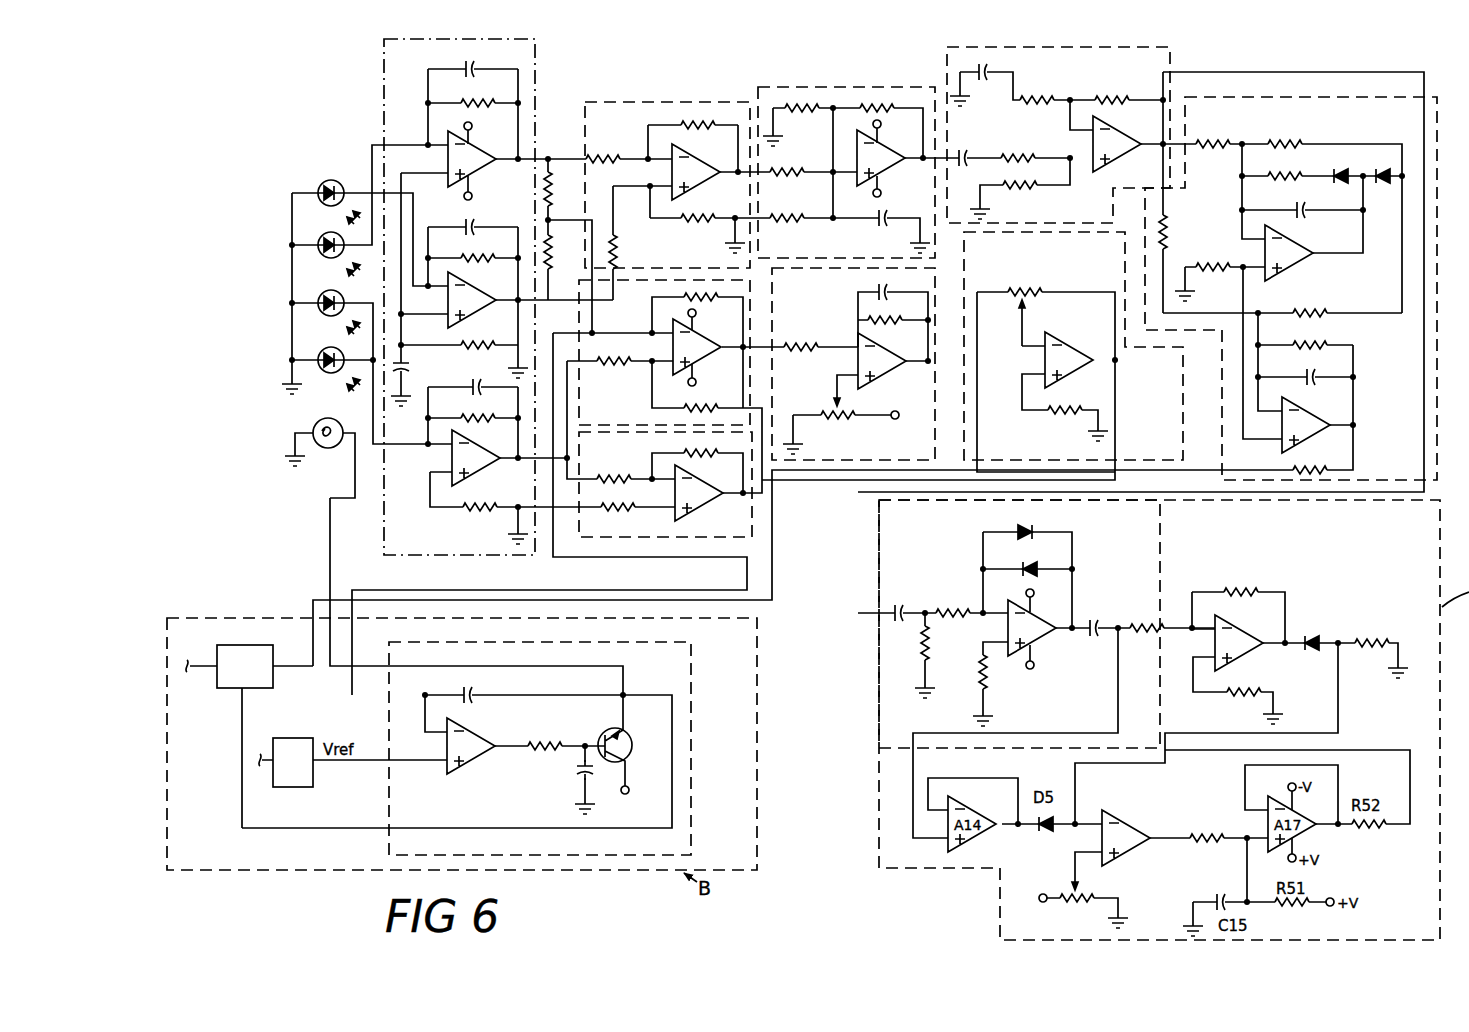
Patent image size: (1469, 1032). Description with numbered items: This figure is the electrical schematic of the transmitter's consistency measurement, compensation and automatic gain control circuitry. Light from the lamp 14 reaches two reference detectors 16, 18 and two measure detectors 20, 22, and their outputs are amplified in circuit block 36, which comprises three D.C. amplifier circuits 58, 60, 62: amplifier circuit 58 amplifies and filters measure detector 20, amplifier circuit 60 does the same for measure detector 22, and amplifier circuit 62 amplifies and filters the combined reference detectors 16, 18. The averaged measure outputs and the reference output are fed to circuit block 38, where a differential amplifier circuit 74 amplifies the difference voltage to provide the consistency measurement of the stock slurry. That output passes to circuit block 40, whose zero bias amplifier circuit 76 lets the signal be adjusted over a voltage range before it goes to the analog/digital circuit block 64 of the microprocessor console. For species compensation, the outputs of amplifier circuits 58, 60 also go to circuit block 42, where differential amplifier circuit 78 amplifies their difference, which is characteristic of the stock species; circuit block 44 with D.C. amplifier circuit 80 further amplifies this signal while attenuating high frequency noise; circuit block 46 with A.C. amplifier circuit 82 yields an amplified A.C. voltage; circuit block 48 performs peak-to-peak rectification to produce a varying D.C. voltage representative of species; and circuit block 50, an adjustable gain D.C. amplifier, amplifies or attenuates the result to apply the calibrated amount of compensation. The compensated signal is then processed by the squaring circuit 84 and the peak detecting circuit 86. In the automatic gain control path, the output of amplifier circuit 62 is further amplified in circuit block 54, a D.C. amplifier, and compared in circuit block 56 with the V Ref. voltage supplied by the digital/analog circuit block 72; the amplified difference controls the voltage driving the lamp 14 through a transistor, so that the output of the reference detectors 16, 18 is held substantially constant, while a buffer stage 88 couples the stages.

The lamp 14 is at (323, 419).
The reference detector 16 is at (320, 312).
The reference detector 18 is at (325, 348).
The measure detector 20 is at (320, 250).
The measure detector 22 is at (320, 198).
The circuit block 36 is at (383, 87).
The circuit block 38 is at (753, 389).
The circuit block 40 is at (891, 460).
The circuit block 42 is at (632, 101).
The circuit block 44 is at (820, 88).
The circuit block 46 is at (1019, 46).
The circuit block 48 is at (1300, 96).
The circuit block 50 is at (1133, 462).
The circuit block 54 is at (755, 530).
The circuit block 56 is at (693, 748).
The amplifier circuit 58 is at (499, 142).
The amplifier circuit 60 is at (492, 308).
The amplifier circuit 62 is at (453, 488).
The analog/digital circuit block 64 is at (231, 690).
The digital/analog circuit block 72 is at (315, 778).
The amplifier circuit 74 is at (667, 375).
The zero bias amplifier circuit 76 is at (879, 384).
The differential amplifier circuit 78 is at (709, 156).
The D.C. amplifier circuit 80 is at (872, 143).
The A.C. amplifier circuit 82 is at (1130, 122).
The squaring circuit 84 is at (1052, 612).
The peak detecting circuit 86 is at (1108, 788).
The operational amplifier A6 88 is at (727, 504).